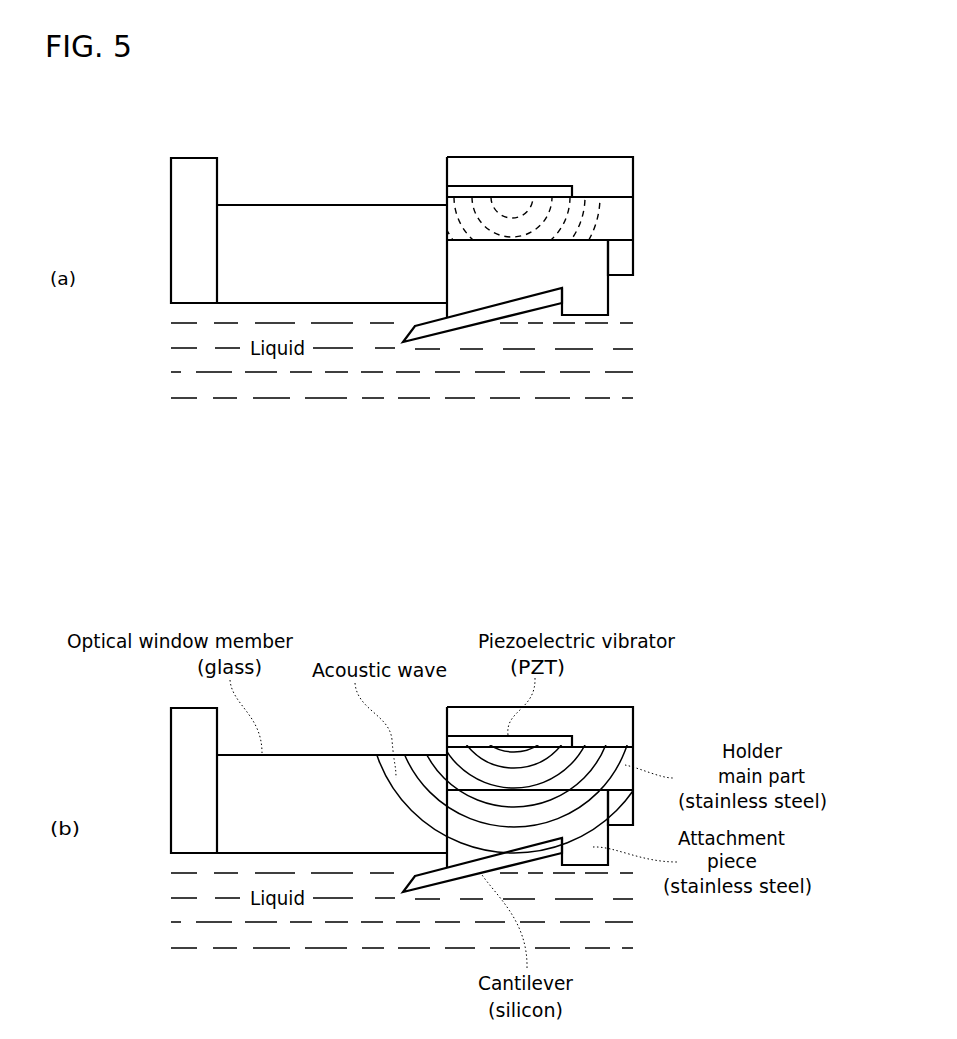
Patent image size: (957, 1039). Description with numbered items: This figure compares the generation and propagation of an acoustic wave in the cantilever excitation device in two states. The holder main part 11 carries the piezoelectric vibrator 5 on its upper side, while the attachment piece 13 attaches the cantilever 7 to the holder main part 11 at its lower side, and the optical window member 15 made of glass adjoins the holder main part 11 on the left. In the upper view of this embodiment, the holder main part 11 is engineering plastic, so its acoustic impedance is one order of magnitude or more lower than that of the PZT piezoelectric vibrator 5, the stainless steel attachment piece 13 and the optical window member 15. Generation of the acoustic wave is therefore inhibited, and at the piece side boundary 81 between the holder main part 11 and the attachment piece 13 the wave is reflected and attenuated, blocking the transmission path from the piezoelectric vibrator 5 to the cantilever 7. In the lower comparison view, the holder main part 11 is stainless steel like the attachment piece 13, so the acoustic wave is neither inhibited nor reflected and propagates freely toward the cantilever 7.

The optical window member 15 is at (333, 203).
The piezoelectric vibrator 5 is at (535, 128).
The piece side boundary 81 is at (590, 228).
The holder main part 11 is at (633, 215).
The attachment piece 13 is at (593, 298).
The cantilever 7 is at (480, 323).